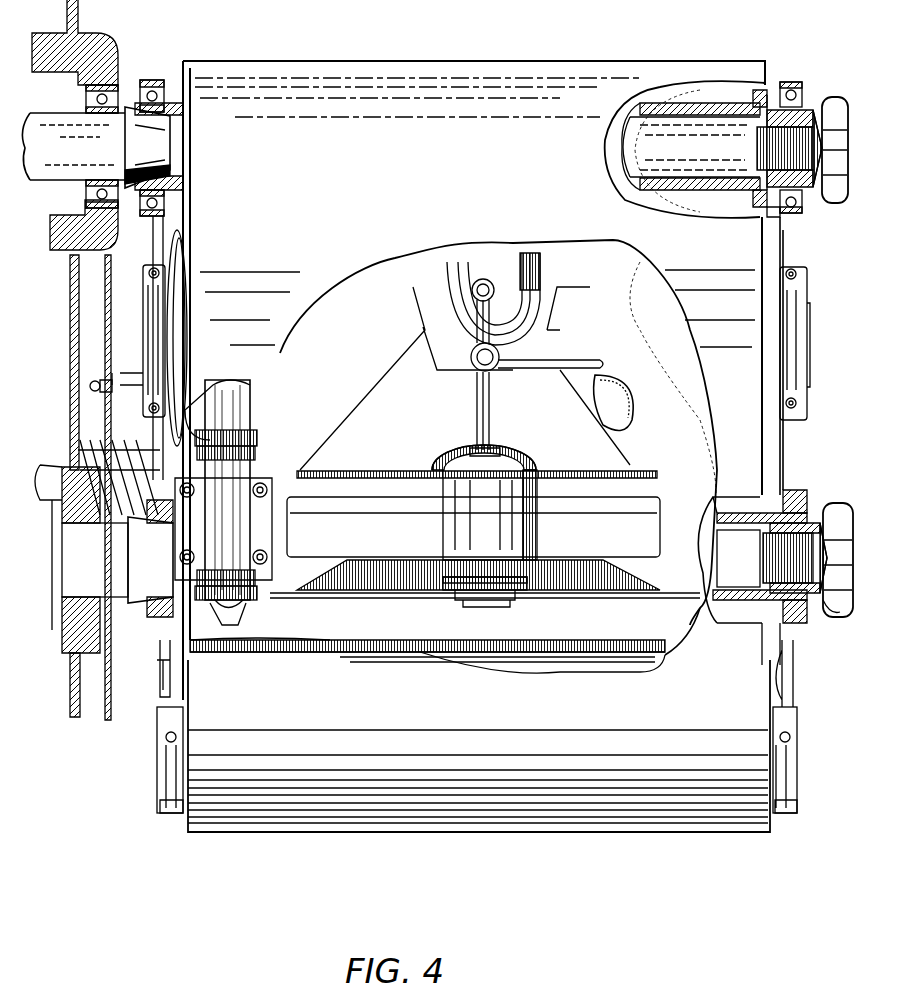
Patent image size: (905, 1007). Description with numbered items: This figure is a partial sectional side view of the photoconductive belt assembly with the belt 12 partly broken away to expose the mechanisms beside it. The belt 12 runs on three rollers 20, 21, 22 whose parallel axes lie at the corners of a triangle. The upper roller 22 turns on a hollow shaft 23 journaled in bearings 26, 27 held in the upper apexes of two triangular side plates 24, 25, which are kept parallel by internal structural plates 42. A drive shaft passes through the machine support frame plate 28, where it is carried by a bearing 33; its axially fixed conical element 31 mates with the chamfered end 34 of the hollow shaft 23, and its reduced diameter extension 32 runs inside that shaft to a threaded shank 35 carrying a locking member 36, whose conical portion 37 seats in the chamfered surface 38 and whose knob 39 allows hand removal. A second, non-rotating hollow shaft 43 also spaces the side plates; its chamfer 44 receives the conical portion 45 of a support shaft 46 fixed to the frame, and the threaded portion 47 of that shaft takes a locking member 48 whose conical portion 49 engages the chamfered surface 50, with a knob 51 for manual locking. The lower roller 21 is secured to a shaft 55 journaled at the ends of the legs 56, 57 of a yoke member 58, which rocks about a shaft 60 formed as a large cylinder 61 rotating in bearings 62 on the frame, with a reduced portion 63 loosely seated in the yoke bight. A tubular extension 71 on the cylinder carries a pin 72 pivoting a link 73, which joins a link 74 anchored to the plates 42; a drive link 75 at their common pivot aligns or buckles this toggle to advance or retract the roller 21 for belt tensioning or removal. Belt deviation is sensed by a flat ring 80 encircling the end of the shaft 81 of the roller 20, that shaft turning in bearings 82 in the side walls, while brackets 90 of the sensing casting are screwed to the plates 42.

The belt 12 is at (290, 60).
The roller 20 is at (610, 415).
The lower roller 21 is at (620, 674).
The upper roller 22 is at (708, 85).
The hollow shaft 23 is at (687, 105).
The side plate 24 is at (780, 240).
The side plate 25 is at (153, 247).
The bearing 26 is at (763, 209).
The bearing 27 is at (152, 82).
The machine support frame plate 28 is at (93, 42).
The conical element 31 is at (170, 166).
The reduced diameter extension 32 is at (617, 156).
The bearing 33 is at (118, 82).
The chamfered end 34 is at (168, 122).
The threaded shank 35 is at (757, 185).
The locking member 36 is at (810, 194).
The conical portion 37 is at (796, 95).
The chamfered surface 38 is at (770, 95).
The knob 39 is at (835, 100).
The internal structural plates 42 is at (373, 395).
The hollow shaft 43 is at (740, 515).
The chamfer 44 is at (158, 529).
The conical portion 45 is at (151, 608).
The support shaft 46 is at (665, 600).
The threaded portion 47 is at (770, 570).
The locking member 48 is at (825, 530).
The conical portion 49 is at (814, 607).
The chamfered surface 50 is at (800, 512).
The knob 51 is at (835, 610).
The shaft 55 is at (800, 748).
The leg 56 is at (162, 808).
The leg 57 is at (800, 808).
The yoke member 58 is at (308, 652).
The shaft 60 is at (420, 509).
The cylinder 61 is at (470, 530).
The bearings 62 is at (525, 520).
The reduced portion 63 is at (512, 605).
The tubular extension 71 is at (463, 448).
The pin 72 is at (492, 445).
The link 73 is at (490, 397).
The link 74 is at (460, 333).
The drive link 75 is at (568, 358).
The flat ring 80 is at (184, 363).
The shaft 81 is at (810, 325).
The bearings 82 is at (147, 290).
The brackets 90 is at (239, 610).